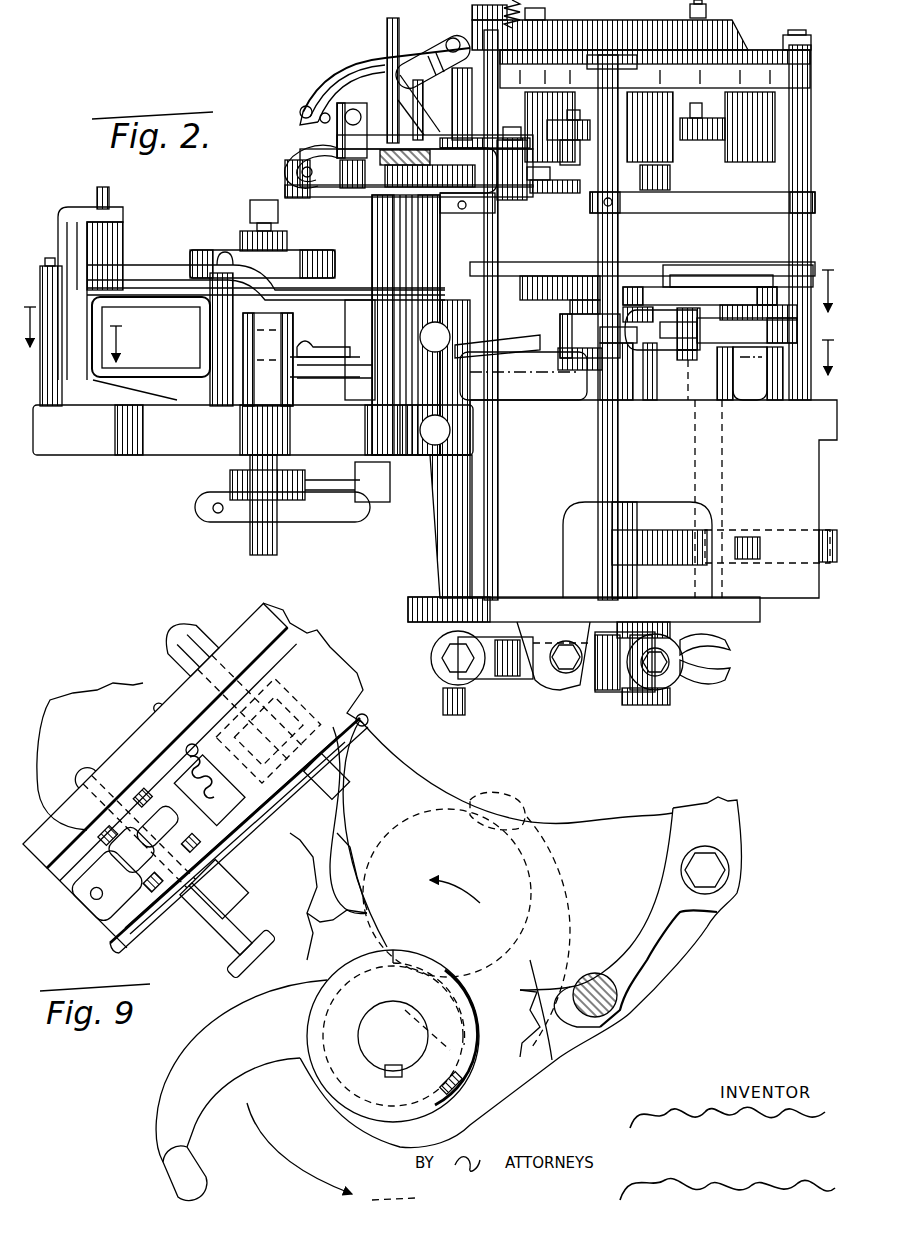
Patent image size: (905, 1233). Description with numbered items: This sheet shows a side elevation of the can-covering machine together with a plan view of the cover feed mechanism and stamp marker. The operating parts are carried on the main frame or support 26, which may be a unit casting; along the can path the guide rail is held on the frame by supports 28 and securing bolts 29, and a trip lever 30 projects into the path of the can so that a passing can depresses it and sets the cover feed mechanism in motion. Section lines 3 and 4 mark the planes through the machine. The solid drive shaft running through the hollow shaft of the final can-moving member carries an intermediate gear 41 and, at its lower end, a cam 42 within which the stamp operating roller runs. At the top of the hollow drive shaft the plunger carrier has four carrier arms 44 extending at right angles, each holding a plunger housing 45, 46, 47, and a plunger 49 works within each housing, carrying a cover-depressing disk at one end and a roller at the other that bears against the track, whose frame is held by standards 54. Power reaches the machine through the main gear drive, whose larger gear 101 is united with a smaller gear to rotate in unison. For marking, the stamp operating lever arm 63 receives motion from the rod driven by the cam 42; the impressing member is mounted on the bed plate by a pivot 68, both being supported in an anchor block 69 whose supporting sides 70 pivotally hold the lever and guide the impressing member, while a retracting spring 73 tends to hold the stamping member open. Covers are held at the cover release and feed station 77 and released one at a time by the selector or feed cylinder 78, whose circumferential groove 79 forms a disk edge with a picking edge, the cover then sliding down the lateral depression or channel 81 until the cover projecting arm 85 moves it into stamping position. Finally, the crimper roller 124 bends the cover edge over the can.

In FIG. 2, the section line 3- 3 is at (429, 318).
In FIG. 2, the section line 4- 4 is at (473, 362).
In FIG. 2, the main frame or support 26 is at (108, 440).
In FIG. 2, the supports 28 is at (216, 308).
In FIG. 2, the securing bolts 29 is at (50, 257).
In FIG. 2, the trip lever 30 is at (175, 310).
In FIG. 2, the intermediate gear 41 is at (611, 565).
In FIG. 2, the cam 42 is at (683, 690).
In FIG. 2, the carrier arms 44 is at (636, 129).
In FIG. 2, the plunger housing 45 is at (539, 127).
In FIG. 2, the plunger housing 46 is at (661, 127).
In FIG. 2, the plunger housing 47 is at (776, 113).
In FIG. 2, the plunger 49 is at (577, 192).
In FIG. 2, the standards 54 is at (596, 80).
In FIG. 2, the stamp operating lever arm 63 is at (456, 46).
In FIG. 2, the pivot 68 is at (290, 168).
In FIG. 2, the anchor block 69 is at (356, 166).
In FIG. 2, the supporting sides 70 is at (352, 92).
In FIG. 9, the supporting sides 70 is at (140, 742).
In FIG. 9, the retracting spring 73 is at (196, 784).
In FIG. 9, the cover release and feed station 77 is at (650, 901).
In FIG. 9, the selector or feed cylinder 78 is at (408, 983).
In FIG. 9, the circumferential groove 79 is at (320, 1077).
In FIG. 9, the lateral depression or channel 81 is at (447, 1080).
In FIG. 9, the cover projecting arm 85 is at (285, 1090).
In FIG. 2, the larger gear 101 is at (771, 537).
In FIG. 2, the crimper roller 124 is at (665, 185).